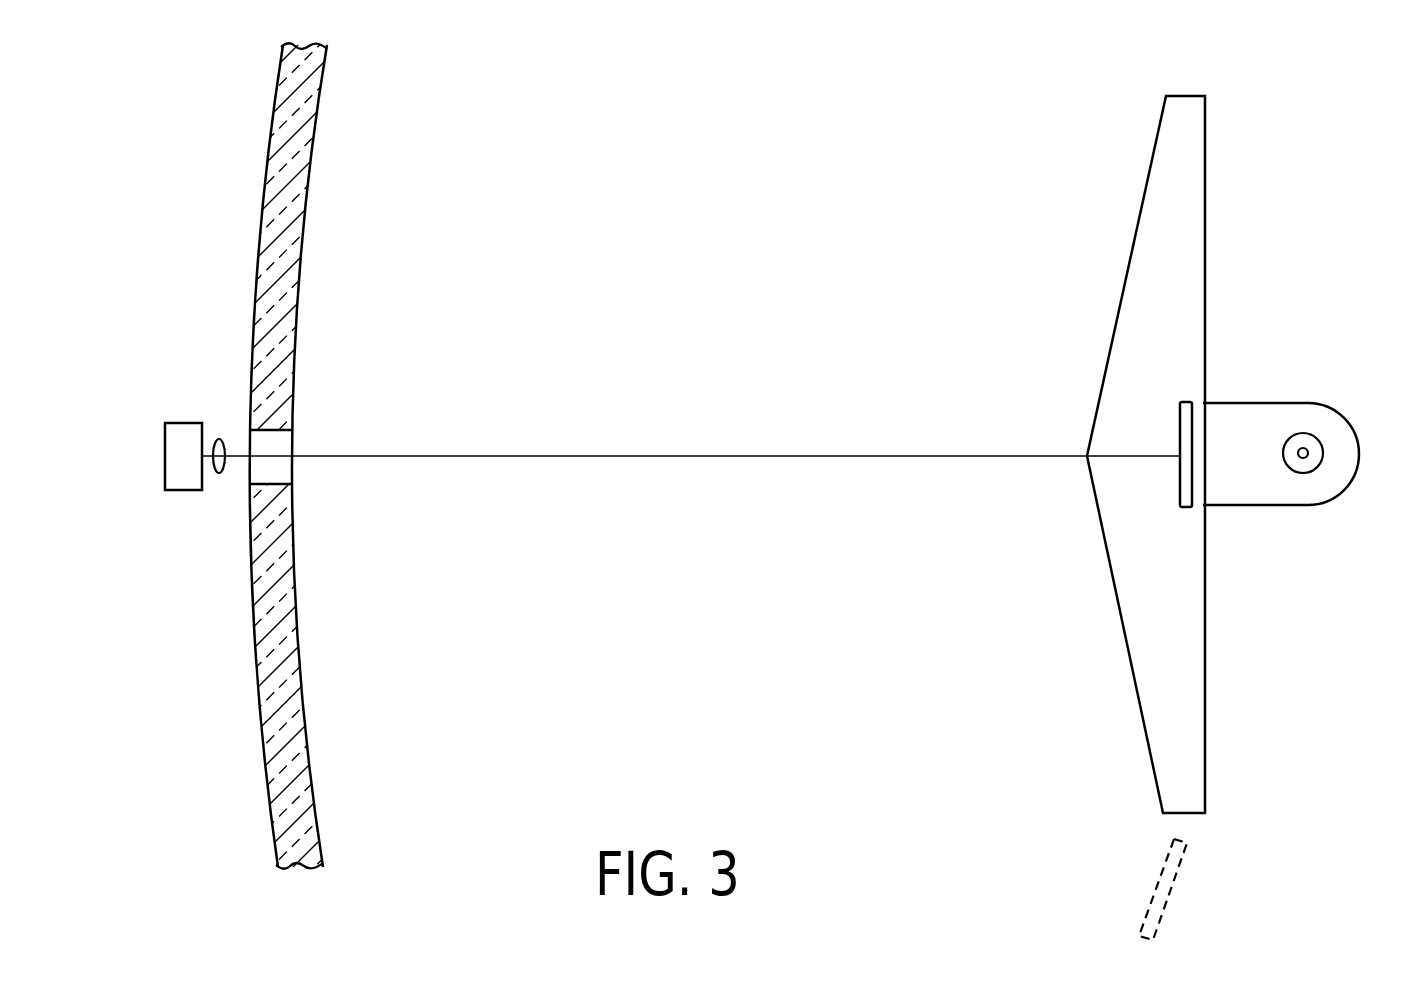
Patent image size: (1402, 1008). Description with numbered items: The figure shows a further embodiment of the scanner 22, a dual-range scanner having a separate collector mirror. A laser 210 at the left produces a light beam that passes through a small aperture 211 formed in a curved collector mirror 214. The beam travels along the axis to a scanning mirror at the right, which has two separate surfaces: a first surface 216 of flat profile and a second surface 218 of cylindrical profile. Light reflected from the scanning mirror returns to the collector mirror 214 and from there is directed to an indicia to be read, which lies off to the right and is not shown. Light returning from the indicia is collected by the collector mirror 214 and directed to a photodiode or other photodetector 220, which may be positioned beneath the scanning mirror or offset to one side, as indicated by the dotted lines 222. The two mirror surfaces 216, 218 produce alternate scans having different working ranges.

The reflector assembly 22 is at (1282, 190).
The laser 210 is at (183, 423).
The aperture 211 is at (273, 483).
The collector mirror 214 is at (302, 260).
The first surface 216 is at (1122, 289).
The second surface 218 is at (1130, 663).
The photodetector 220 is at (1179, 489).
The dotted lines 222 is at (1172, 890).